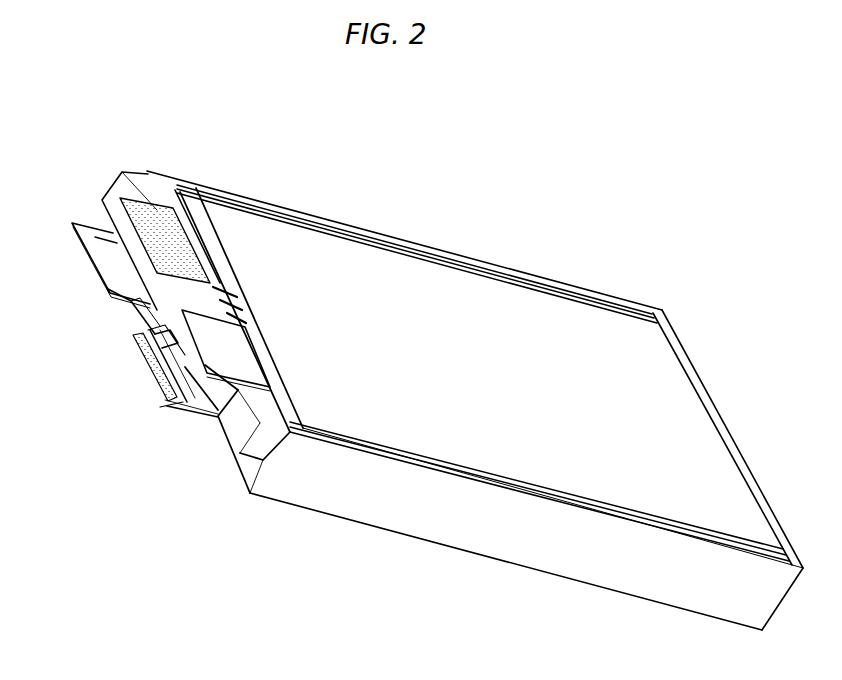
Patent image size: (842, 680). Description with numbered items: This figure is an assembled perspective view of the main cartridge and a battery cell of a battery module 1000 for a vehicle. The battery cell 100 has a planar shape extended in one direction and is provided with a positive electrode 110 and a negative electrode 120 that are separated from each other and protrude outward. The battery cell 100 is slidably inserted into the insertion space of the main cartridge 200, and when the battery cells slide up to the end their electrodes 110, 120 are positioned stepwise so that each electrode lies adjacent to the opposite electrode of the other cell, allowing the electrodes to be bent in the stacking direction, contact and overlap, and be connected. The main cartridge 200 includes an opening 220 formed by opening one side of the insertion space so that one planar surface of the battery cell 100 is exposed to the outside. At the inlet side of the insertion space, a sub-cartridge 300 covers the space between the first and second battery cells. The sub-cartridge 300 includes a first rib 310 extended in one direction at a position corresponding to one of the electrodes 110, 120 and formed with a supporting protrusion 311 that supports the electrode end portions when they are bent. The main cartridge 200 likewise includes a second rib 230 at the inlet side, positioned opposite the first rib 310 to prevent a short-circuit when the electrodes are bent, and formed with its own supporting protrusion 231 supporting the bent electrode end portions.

The battery module 1000 is at (605, 139).
The battery cell 100 is at (428, 298).
The positive electrode 110 is at (155, 218).
The negative electrode 120 is at (95, 237).
The main cartridge 200 is at (515, 545).
The opening 220 is at (567, 342).
The second rib 230 is at (140, 324).
The supporting protrusion 231 is at (133, 312).
The sub-cartridge 300 is at (178, 485).
The first rib 310 is at (216, 406).
The supporting protrusion 311 is at (163, 400).